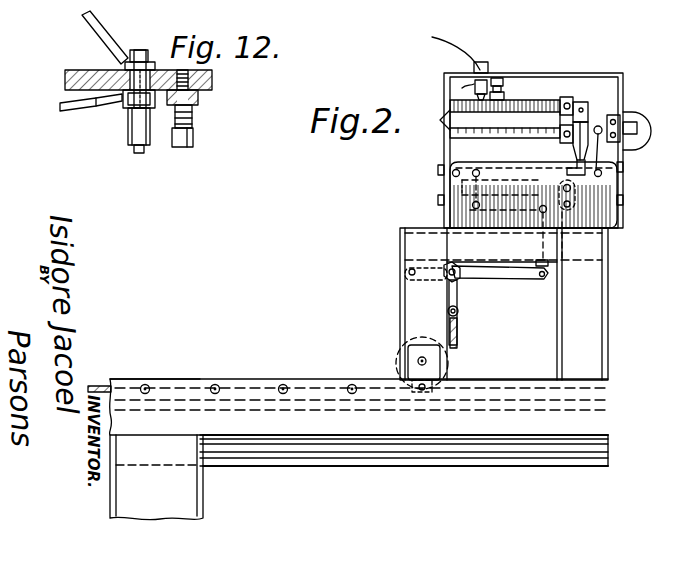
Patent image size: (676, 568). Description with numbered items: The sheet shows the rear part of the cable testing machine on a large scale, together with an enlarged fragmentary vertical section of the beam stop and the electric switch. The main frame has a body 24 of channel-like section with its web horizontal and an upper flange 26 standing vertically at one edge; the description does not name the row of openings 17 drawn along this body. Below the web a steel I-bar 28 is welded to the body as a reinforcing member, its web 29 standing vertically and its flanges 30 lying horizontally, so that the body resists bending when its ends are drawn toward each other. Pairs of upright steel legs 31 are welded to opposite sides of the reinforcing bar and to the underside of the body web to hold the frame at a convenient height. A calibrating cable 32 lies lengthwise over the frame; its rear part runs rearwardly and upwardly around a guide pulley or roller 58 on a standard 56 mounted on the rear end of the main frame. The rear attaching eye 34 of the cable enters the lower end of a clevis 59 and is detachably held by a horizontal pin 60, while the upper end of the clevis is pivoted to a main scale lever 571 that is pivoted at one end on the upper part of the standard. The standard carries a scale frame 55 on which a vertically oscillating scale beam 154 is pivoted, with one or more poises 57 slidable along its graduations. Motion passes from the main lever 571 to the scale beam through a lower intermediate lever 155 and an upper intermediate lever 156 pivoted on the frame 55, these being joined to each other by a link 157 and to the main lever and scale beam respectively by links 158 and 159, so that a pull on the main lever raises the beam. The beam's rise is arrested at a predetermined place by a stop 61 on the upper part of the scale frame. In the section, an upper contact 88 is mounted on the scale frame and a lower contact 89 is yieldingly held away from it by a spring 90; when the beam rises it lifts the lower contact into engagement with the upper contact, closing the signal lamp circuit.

In FIG. 2, the holes 17 is at (284, 385).
In FIG. 2, the table 24 is at (359, 394).
In FIG. 2, the upper flange 26 is at (120, 380).
In FIG. 2, the steel I-bar 28 is at (405, 460).
In FIG. 2, the web 29 is at (600, 450).
In FIG. 2, the flanges 30 is at (522, 467).
In FIG. 2, the upright steel legs 31 is at (156, 477).
In FIG. 2, the calibrating cable 32 is at (95, 380).
In FIG. 2, the attaching eye 34 is at (457, 322).
In FIG. 12, the frame 55 is at (212, 78).
In FIG. 2, the frame 55 is at (621, 73).
In FIG. 2, the standard 56 is at (604, 276).
In FIG. 2, the scale weights or poises 57 is at (560, 110).
In FIG. 2, the guide pulley or roller 58 is at (398, 355).
In FIG. 2, the clevis 59 is at (449, 297).
In FIG. 2, the horizontal pin 60 is at (459, 311).
In FIG. 12, the stop 61 is at (195, 137).
In FIG. 2, the stop 61 is at (505, 95).
In FIG. 12, the upper contact 88 is at (128, 72).
In FIG. 12, the lower contact 89 is at (138, 153).
In FIG. 2, the lower contact 89 is at (458, 96).
In FIG. 12, the spring 90 is at (127, 100).
In FIG. 2, the scale beam 154 is at (505, 119).
In FIG. 2, the lower intermediate lever 155 is at (480, 208).
In FIG. 2, the upper intermediate lever 156 is at (533, 186).
In FIG. 2, the link 157 is at (448, 186).
In FIG. 2, the link 158 is at (546, 216).
In FIG. 2, the link 159 is at (600, 150).
In FIG. 2, the main scale lever 571 is at (506, 278).